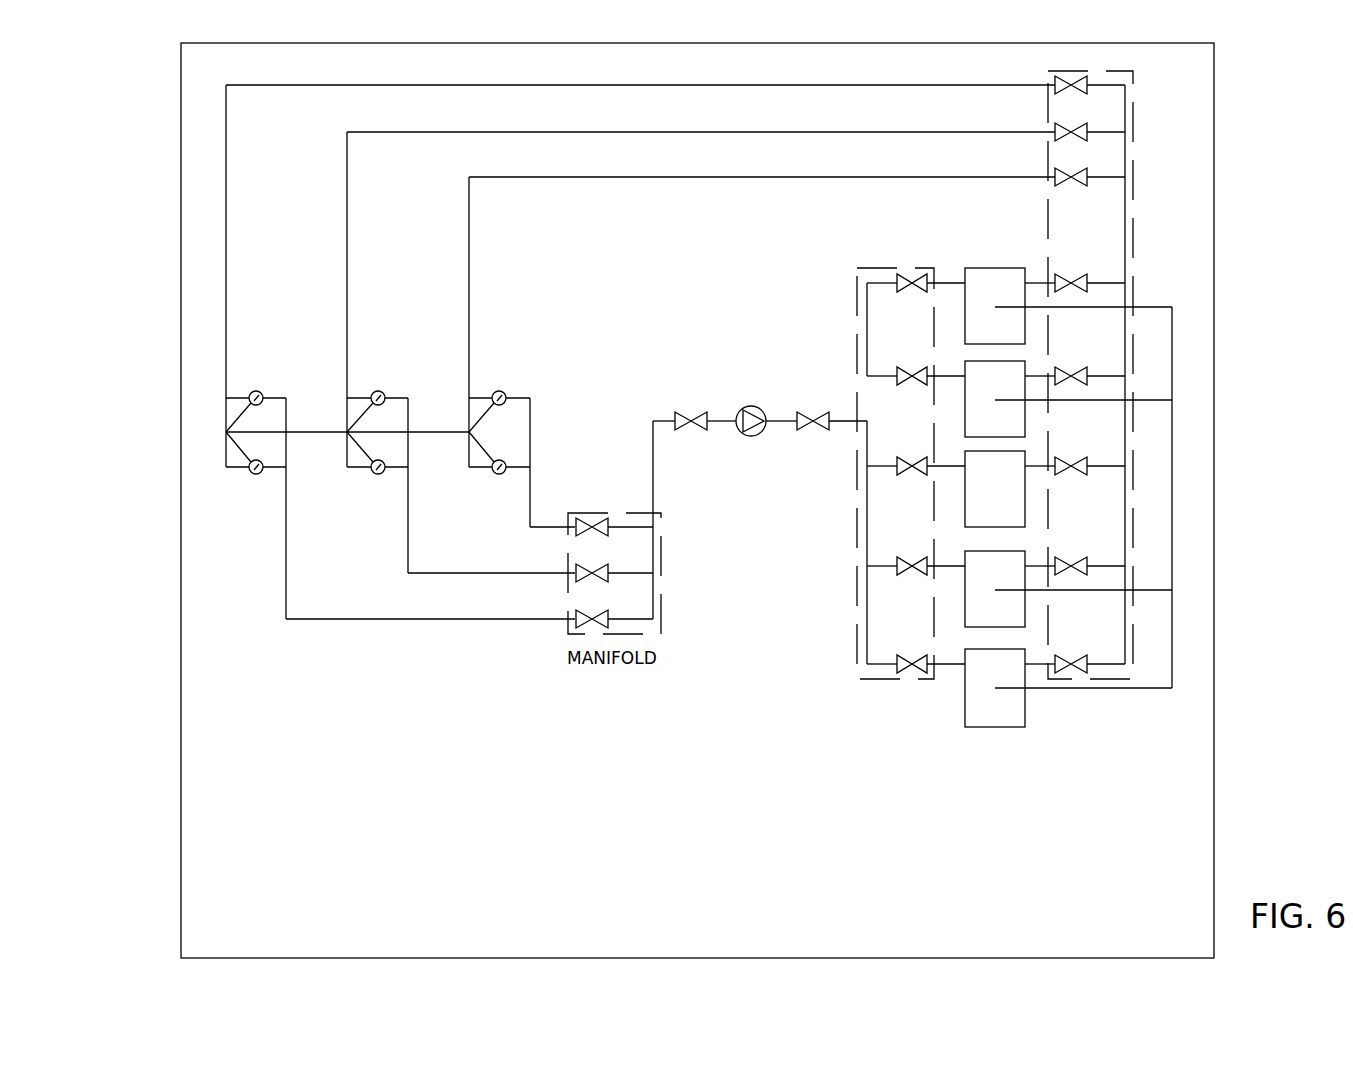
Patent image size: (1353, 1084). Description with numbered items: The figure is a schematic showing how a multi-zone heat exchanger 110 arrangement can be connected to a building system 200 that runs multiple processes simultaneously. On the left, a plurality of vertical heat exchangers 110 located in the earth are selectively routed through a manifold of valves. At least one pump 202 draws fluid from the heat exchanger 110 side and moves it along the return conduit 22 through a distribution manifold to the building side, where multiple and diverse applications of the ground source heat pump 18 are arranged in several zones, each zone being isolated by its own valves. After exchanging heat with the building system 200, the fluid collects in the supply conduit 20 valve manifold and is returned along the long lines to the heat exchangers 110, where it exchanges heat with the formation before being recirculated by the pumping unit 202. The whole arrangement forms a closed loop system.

The building system 200 is at (150, 683).
The heat exchanger 110 is at (226, 432).
The return conduit 22 is at (653, 463).
The pump 202 is at (751, 436).
The heat pump 18 is at (995, 490).
The supply conduit 20 is at (1127, 221).